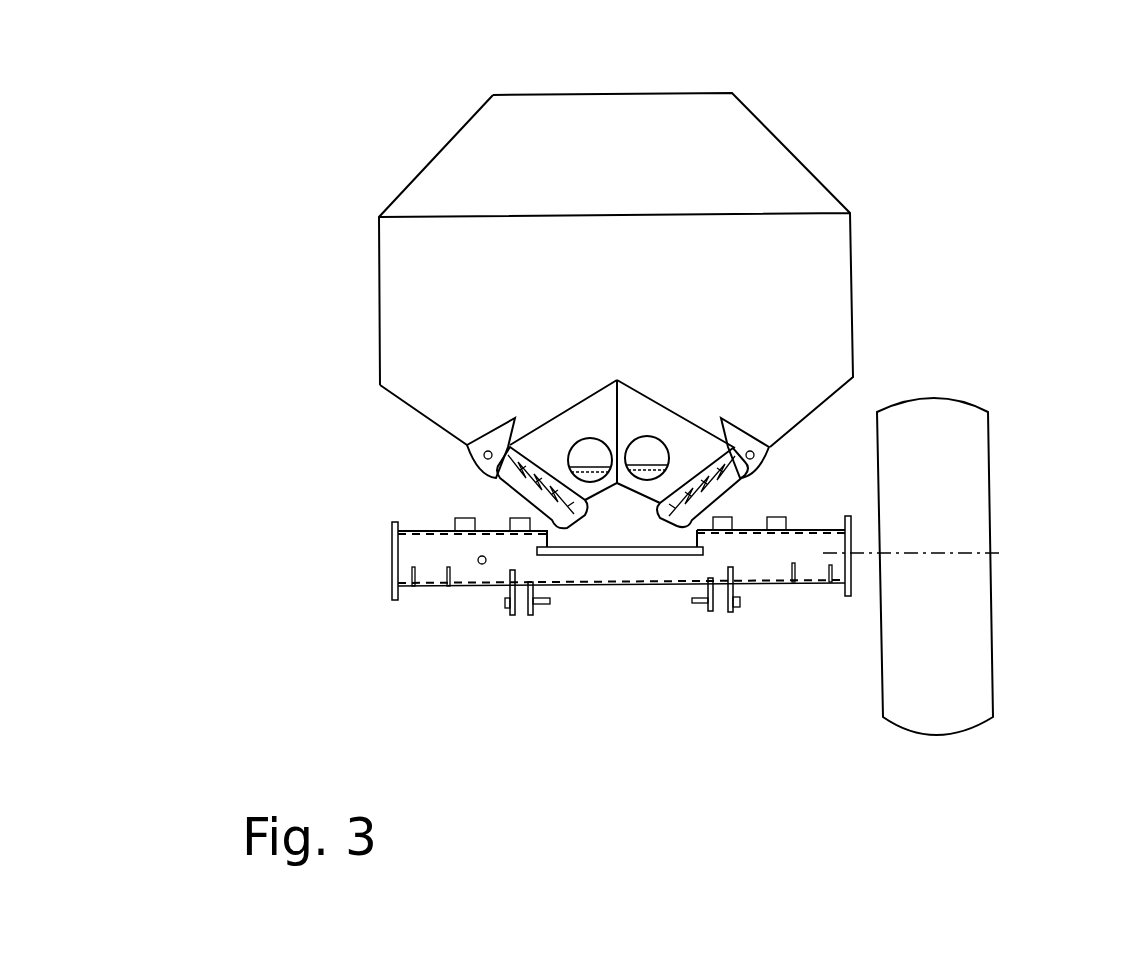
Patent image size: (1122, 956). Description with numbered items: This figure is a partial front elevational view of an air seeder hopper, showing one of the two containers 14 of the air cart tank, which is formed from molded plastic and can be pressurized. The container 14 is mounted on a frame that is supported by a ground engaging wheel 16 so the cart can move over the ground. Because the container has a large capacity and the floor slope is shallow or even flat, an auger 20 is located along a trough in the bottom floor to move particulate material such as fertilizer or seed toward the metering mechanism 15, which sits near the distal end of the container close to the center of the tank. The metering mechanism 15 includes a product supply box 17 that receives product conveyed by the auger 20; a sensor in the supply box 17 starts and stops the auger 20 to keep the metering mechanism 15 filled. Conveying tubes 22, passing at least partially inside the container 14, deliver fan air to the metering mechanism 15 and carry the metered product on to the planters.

The container 14 is at (797, 157).
The metering mechanism 15 is at (593, 481).
The ground engaging wheel 16 is at (988, 465).
The product supply box 17 is at (633, 480).
The auger 20 is at (500, 478).
The conveying tube 22 is at (583, 542).